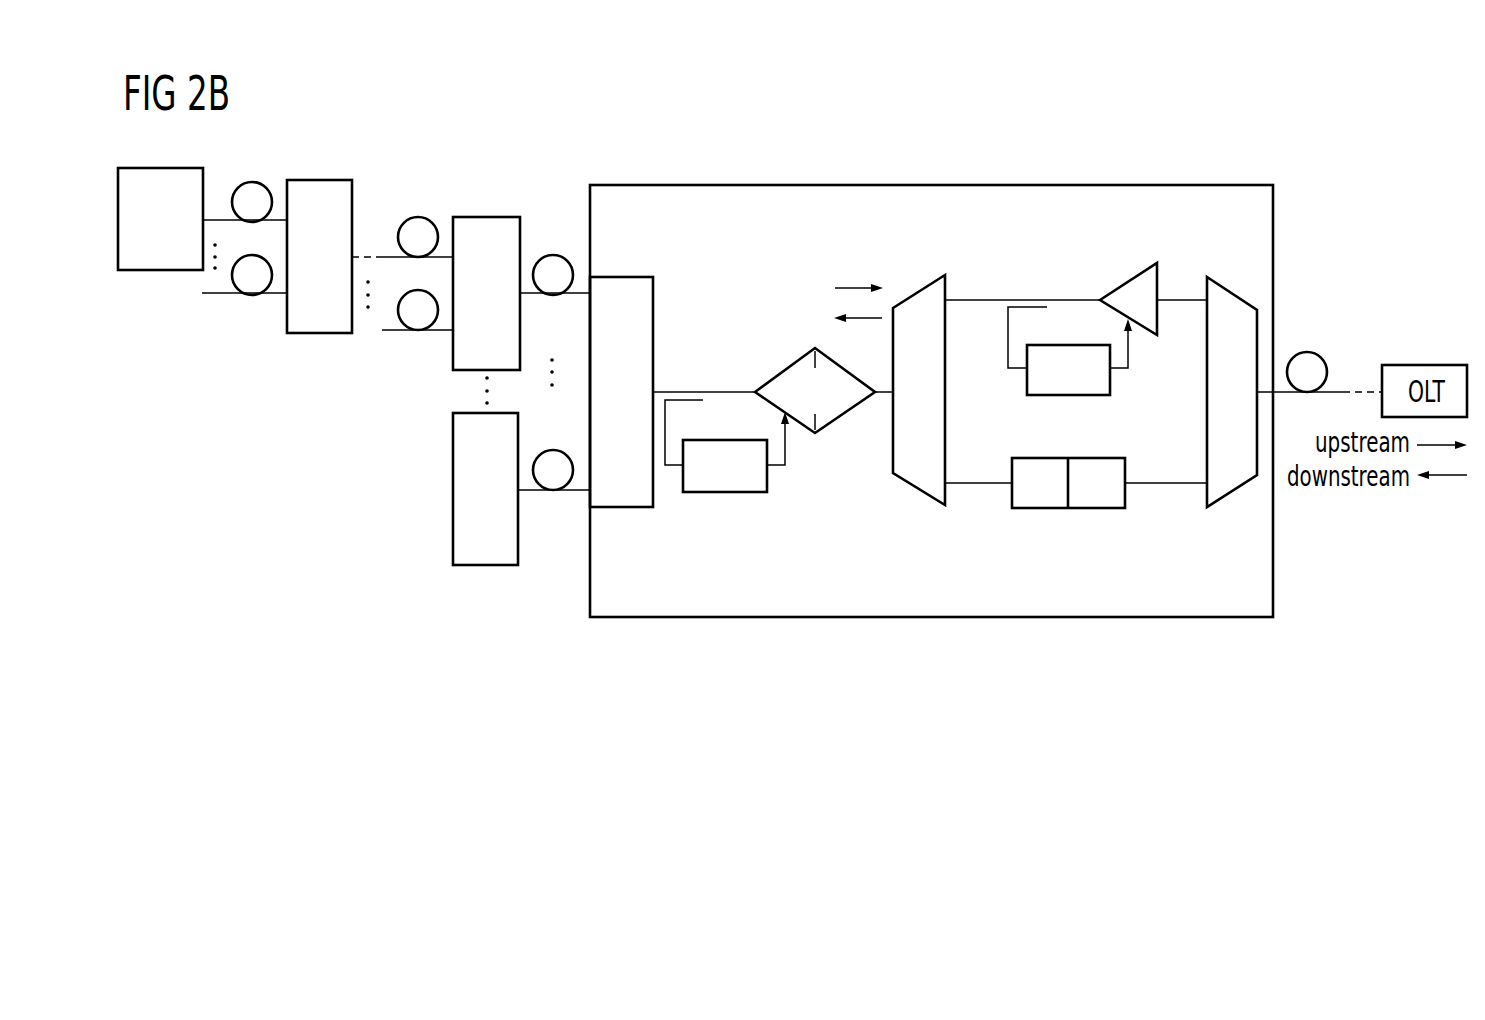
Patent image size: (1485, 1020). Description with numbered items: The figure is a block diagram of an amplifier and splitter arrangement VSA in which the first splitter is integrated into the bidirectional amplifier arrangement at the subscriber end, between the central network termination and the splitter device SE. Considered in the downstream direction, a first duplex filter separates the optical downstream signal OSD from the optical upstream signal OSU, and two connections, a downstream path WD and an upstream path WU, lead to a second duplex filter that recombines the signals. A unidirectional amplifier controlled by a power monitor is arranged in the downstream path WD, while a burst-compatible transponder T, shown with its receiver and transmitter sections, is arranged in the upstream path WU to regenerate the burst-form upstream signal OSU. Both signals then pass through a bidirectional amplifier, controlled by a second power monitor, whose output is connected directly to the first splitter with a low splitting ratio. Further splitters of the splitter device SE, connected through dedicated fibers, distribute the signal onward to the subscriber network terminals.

The splitter device SE is at (354, 405).
The amplifier and splitter arrangement VSA is at (993, 617).
The connecting path for the downstream signal WD is at (970, 302).
The connecting path for the upstream signal WU is at (1170, 484).
The transponder T is at (1125, 453).
The optical downstream signal OSD is at (1065, 280).
The optical upstream signal OSU is at (1104, 528).